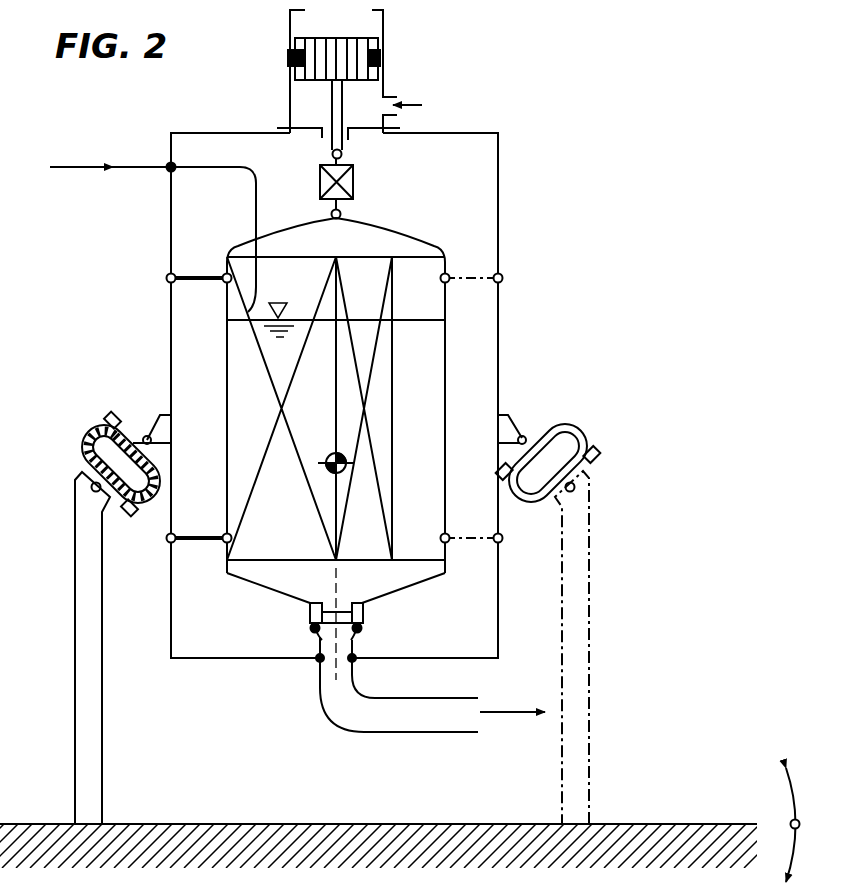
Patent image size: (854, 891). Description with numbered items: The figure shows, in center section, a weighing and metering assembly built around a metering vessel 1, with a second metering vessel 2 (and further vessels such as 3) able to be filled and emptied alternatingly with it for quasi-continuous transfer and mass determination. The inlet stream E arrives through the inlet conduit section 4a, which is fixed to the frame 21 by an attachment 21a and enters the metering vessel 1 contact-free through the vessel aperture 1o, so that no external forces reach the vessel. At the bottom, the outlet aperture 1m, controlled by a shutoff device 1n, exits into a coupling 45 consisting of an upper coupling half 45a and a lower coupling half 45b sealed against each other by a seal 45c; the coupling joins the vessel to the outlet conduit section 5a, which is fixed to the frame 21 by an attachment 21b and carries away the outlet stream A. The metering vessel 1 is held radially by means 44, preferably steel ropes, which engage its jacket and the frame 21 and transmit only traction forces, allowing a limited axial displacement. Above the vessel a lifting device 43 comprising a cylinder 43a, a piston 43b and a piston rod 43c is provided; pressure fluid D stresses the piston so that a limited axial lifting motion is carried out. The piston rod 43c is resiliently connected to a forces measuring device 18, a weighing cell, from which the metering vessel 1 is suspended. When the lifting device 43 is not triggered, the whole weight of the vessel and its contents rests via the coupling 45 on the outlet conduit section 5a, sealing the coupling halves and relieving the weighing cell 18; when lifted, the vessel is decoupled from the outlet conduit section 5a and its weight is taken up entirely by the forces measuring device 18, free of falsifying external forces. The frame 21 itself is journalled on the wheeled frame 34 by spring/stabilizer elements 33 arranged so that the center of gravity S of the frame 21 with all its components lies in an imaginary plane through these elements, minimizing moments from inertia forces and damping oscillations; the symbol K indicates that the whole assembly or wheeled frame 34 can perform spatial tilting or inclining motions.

The metering vessel 1 is at (415, 449).
The second metering vessel 2 is at (309, 408).
The container 3 is at (336, 320).
The vessel aperture 1o is at (248, 236).
The outlet aperture 1m is at (330, 603).
The shutoff device 1n is at (312, 634).
The inlet conduit section 4a is at (150, 164).
The outlet conduit section 5a is at (330, 698).
The forces measuring device 18 is at (352, 183).
The frame 21 is at (498, 318).
The attachment 21a is at (166, 169).
The attachment 21b is at (318, 662).
The spring/stabilizer elements 33 is at (83, 450).
The wheeled frame 34 is at (577, 838).
The lifting device 43 is at (333, 84).
The cylinder 43a is at (290, 98).
The piston 43b is at (318, 62).
The piston rod 43c is at (333, 147).
The means 44 is at (190, 283).
The coupling 45 is at (300, 622).
The upper coupling half 45a is at (362, 612).
The lower coupling half 45b is at (360, 650).
The seal 45c is at (365, 627).
The center of gravity S is at (330, 470).
The inlet stream E is at (81, 151).
The pressure fluid D is at (429, 91).
The outlet stream A is at (512, 732).
The tilting motion symbol K is at (807, 825).